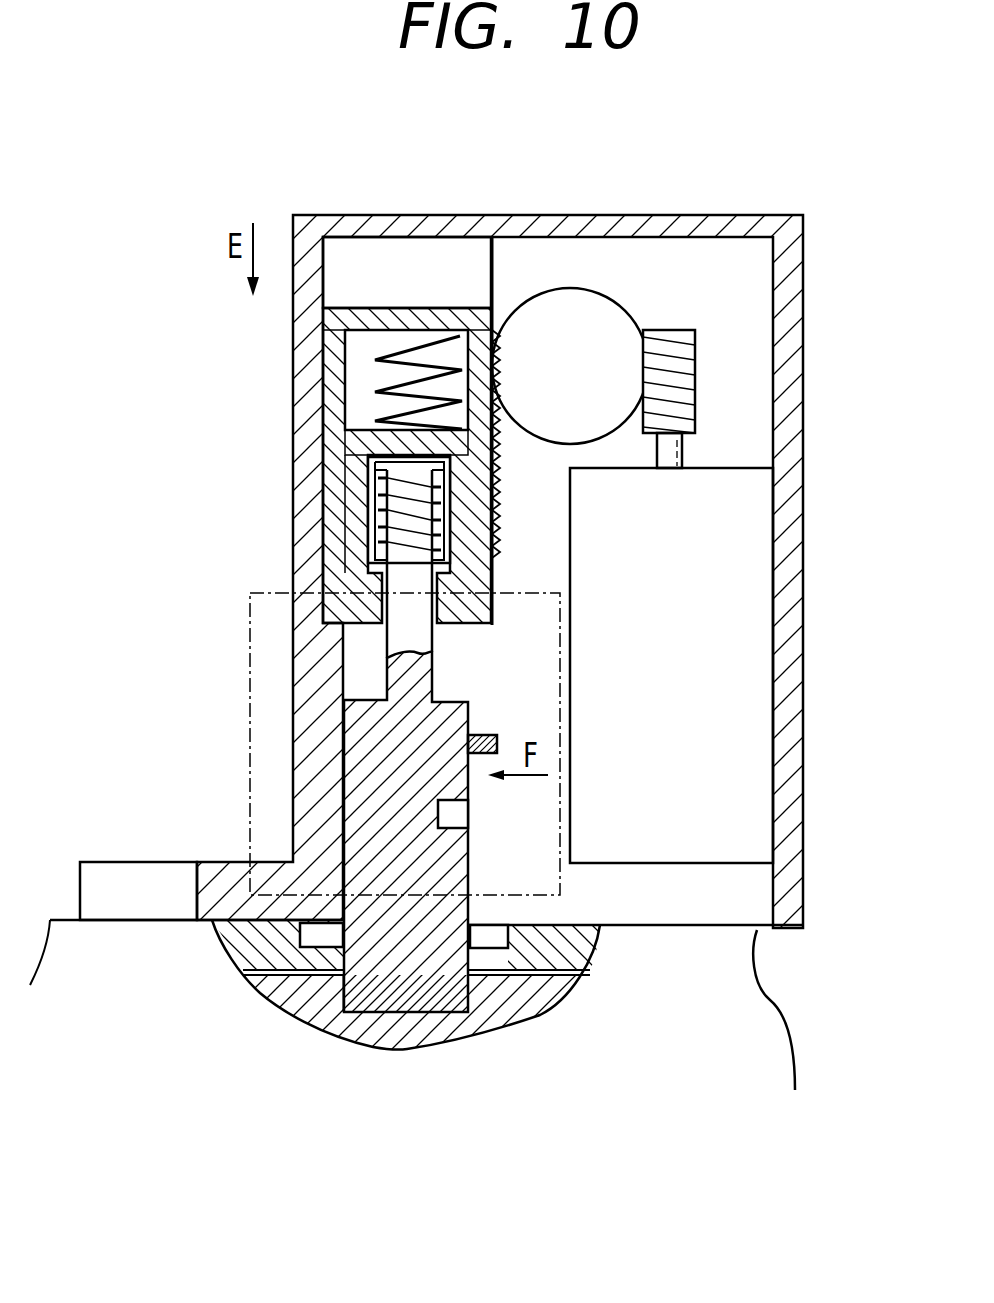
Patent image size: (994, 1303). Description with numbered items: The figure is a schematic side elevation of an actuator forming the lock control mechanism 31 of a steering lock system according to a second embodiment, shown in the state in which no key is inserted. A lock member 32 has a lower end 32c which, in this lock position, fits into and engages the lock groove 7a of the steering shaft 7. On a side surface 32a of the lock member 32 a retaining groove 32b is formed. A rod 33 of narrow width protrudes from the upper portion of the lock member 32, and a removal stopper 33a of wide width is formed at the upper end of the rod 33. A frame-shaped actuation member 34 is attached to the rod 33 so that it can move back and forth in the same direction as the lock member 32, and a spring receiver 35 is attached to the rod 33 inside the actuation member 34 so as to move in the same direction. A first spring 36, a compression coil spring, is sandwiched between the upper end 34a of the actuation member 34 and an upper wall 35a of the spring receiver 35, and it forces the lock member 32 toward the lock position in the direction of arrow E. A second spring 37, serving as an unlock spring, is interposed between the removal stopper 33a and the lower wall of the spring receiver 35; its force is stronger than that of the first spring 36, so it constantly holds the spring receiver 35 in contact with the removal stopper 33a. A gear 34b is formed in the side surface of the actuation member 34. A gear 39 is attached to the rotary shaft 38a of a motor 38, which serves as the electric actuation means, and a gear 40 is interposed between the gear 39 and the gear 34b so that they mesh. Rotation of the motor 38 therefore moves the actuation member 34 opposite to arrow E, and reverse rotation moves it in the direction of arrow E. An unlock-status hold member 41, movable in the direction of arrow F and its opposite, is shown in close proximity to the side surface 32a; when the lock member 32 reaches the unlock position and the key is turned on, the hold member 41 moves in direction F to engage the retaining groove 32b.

The steering shaft 7 is at (545, 995).
The lock groove 7a is at (455, 1000).
The lock control mechanism 31 is at (511, 298).
The lock member 32 is at (352, 828).
The side surface 32a is at (450, 865).
The retaining groove 32b is at (468, 815).
The lower end 32c is at (330, 1015).
The rod 33 is at (387, 668).
The removal stopper 33a is at (357, 465).
The actuation member 34 is at (333, 355).
The upper end 34a is at (407, 312).
The gear 34b is at (500, 498).
The spring receiver 35 is at (355, 512).
The upper wall 35a is at (345, 410).
The first spring 36 is at (377, 360).
The second spring 37 is at (372, 545).
The motor 38 is at (735, 685).
The rotary shaft 38a is at (683, 453).
The gear 39 is at (695, 357).
The gear 40 is at (598, 288).
The unlock-status hold member 41 is at (497, 737).